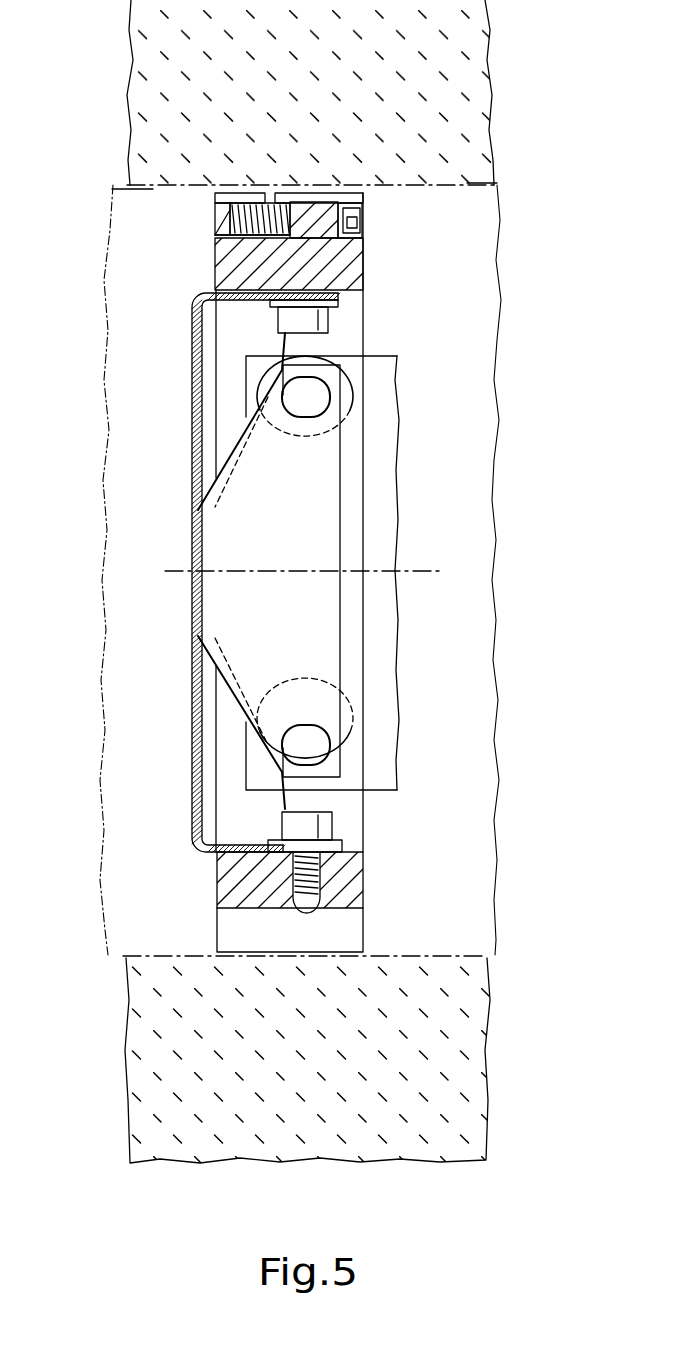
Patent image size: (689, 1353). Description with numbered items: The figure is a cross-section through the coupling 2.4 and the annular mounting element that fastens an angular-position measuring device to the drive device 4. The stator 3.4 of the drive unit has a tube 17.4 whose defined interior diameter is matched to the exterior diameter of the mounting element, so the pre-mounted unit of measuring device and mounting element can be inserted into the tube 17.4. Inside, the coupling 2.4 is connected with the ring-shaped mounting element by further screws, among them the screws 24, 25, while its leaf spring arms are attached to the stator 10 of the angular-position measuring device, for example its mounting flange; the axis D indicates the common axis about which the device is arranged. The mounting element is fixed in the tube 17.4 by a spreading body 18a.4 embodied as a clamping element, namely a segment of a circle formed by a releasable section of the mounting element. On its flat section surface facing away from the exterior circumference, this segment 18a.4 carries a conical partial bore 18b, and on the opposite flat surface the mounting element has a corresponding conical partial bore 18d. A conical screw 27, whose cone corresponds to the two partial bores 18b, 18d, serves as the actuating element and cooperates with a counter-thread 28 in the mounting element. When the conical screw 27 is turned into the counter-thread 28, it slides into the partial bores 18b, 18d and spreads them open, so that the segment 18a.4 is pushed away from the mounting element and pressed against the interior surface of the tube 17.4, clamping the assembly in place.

The drive device 4 is at (116, 110).
The stator of the drive unit 3.4 is at (491, 111).
The tube 17.4 is at (423, 955).
The spreading body 18a.4 is at (300, 203).
The conical partial bore 18b is at (302, 212).
The conical partial bore 18d is at (323, 238).
The conical screw 27 is at (345, 208).
The counter-thread 28 is at (215, 221).
The screw 24 is at (328, 312).
The screw 25 is at (332, 822).
The coupling 2.4 is at (193, 438).
The stator of the angular-position measuring device 10 is at (385, 742).
The axis D is at (423, 571).